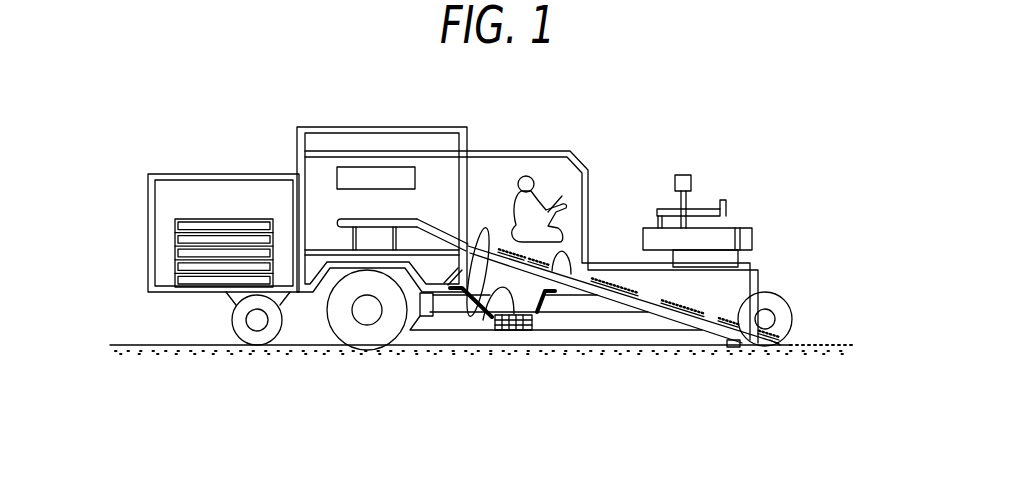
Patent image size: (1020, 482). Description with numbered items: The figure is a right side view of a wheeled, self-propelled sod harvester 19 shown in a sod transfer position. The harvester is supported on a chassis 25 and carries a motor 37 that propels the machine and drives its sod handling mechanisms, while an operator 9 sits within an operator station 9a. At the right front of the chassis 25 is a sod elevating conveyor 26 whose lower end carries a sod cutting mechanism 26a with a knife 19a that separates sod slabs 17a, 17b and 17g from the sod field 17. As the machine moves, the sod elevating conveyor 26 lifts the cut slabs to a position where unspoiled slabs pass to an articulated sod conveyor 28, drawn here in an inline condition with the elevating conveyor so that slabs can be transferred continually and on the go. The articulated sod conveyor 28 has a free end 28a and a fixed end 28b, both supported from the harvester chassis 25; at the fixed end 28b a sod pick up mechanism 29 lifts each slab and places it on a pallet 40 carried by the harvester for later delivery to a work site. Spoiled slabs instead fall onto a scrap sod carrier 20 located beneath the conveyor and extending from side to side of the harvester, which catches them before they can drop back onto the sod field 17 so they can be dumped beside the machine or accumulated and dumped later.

The operator 9 is at (530, 193).
The operator station 9a is at (498, 185).
The sod field 17 is at (842, 343).
The sod slab 17a is at (607, 280).
The sod slab 17b is at (680, 310).
The sod slab 17g is at (571, 262).
The sod harvester 19 is at (662, 126).
The knife 19a is at (753, 347).
The scrap sod carrier 20 is at (502, 323).
The chassis 25 is at (588, 223).
The sod elevating conveyor 26 is at (643, 312).
The sod cutting mechanism 26a is at (729, 347).
The articulated sod conveyor 28 is at (433, 207).
The articulated conveyor free end 28a is at (486, 234).
The articulated conveyor fixed end 28b is at (365, 218).
The sod pick up mechanism 29 is at (365, 175).
The motor 37 is at (698, 237).
The pallet 40 is at (177, 252).